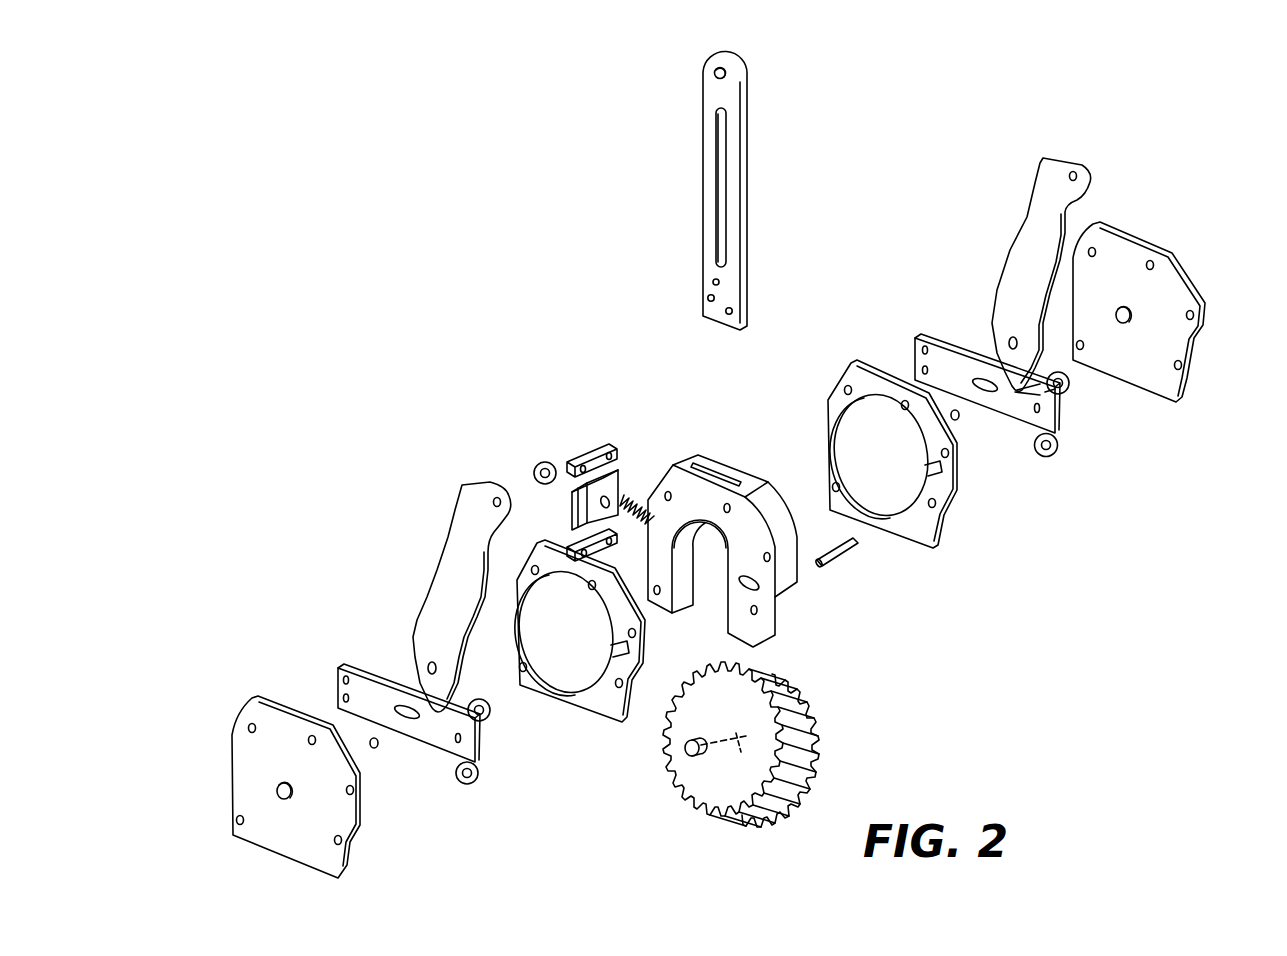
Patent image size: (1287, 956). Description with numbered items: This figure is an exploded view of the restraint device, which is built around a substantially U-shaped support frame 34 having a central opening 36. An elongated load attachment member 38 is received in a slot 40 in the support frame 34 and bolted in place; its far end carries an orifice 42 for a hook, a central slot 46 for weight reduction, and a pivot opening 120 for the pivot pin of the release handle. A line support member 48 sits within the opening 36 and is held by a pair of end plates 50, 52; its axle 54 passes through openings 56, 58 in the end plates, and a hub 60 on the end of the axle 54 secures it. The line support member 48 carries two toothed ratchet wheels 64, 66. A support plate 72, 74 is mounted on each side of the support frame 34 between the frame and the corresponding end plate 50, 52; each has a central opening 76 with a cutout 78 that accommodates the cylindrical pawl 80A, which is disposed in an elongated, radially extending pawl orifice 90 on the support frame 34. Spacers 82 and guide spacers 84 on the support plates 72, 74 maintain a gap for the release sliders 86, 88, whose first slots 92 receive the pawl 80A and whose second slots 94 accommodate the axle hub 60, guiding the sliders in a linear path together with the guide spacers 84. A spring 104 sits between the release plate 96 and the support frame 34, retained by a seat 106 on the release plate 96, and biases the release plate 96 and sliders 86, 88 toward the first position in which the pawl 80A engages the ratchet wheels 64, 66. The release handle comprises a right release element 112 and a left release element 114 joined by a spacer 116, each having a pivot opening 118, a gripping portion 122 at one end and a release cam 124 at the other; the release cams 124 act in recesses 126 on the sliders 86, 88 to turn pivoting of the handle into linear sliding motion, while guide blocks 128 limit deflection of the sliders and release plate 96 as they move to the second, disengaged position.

The support frame 34 is at (772, 523).
The central opening 36 is at (727, 598).
The load attachment member 38 is at (733, 92).
The slot 40 is at (720, 467).
The orifice 42 is at (715, 73).
The central slot 46 is at (735, 187).
The line support member 48 is at (770, 768).
The end plate 50 is at (238, 755).
The end plate 52 is at (1178, 287).
The axle 54 is at (790, 722).
The opening 56 is at (280, 791).
The opening 58 is at (1132, 322).
The hub 60 is at (693, 757).
The toothed ratchet wheel 64 is at (756, 784).
The toothed ratchet wheel 66 is at (810, 757).
The support plate 72 is at (607, 707).
The support plate 74 is at (927, 546).
The central opening 76 is at (892, 513).
The cutout 78 is at (930, 470).
The cylindrical pawl 80A is at (827, 566).
The spacer 82 is at (955, 420).
The guide spacer 84 is at (1070, 388).
The release slider 86 is at (343, 667).
The release slider 88 is at (938, 350).
The pawl orifice 90 is at (763, 588).
The first slot 92 is at (1058, 395).
The second slot 94 is at (990, 397).
The release plate 96 is at (620, 462).
The spring 104 is at (574, 472).
The seat 106 is at (573, 497).
The right release element 112 is at (435, 600).
The left release element 114 is at (1017, 273).
The spacer 116 is at (536, 466).
The pivot opening 118 is at (1008, 344).
The pivot opening 120 is at (733, 311).
The gripping portion 122 is at (1077, 200).
The release cam 124 is at (1045, 410).
The recess 126 is at (1017, 396).
The guide block 128 is at (580, 453).